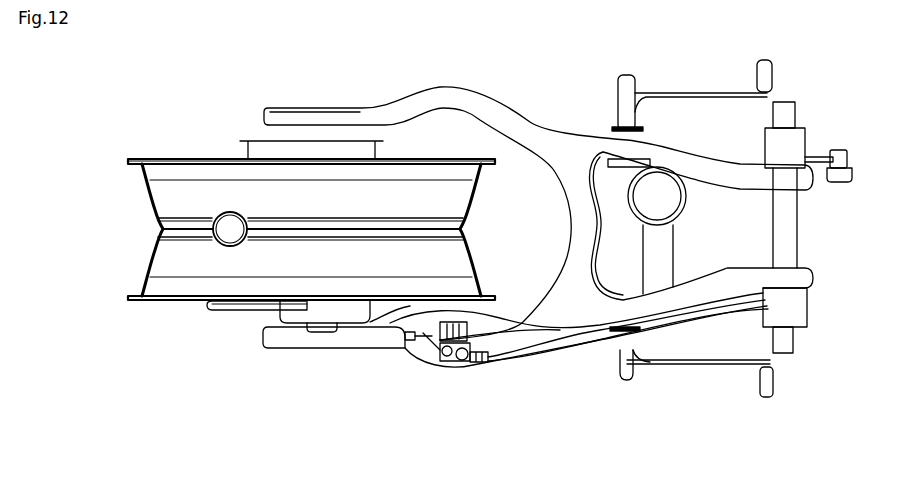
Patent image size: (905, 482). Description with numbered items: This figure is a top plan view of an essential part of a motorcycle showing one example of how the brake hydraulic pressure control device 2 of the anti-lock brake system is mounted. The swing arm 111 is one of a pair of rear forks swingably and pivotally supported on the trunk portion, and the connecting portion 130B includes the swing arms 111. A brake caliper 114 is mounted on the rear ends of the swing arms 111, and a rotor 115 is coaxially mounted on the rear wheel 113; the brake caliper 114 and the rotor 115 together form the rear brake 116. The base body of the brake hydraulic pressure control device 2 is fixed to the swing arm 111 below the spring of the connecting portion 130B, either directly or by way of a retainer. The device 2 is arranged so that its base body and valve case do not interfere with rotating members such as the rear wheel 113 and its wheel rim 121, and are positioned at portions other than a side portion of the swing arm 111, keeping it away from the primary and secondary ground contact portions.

The brake hydraulic pressure control device 2 is at (425, 358).
The swing arm 111 is at (405, 356).
The rear wheel 113 is at (124, 229).
The brake caliper 114 is at (283, 312).
The rotor 115 is at (205, 304).
The rear brake 116 is at (162, 348).
The wheel rim 121 is at (163, 157).
The connecting portion 130B is at (535, 365).